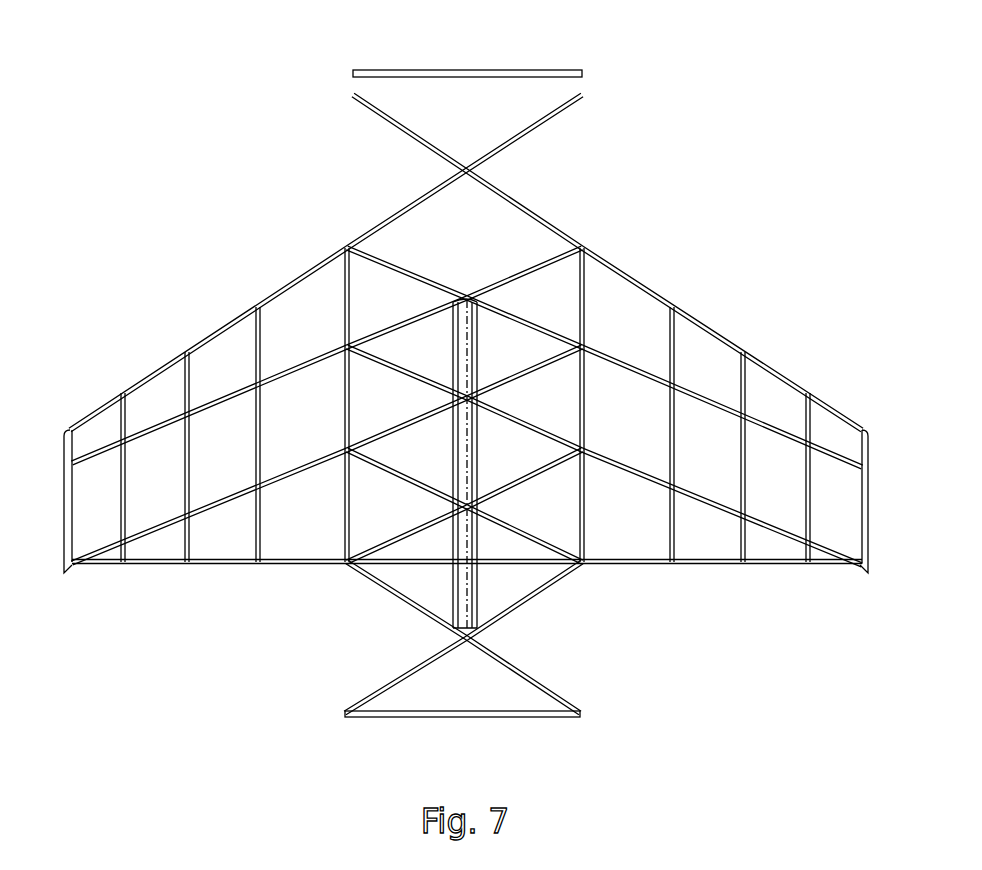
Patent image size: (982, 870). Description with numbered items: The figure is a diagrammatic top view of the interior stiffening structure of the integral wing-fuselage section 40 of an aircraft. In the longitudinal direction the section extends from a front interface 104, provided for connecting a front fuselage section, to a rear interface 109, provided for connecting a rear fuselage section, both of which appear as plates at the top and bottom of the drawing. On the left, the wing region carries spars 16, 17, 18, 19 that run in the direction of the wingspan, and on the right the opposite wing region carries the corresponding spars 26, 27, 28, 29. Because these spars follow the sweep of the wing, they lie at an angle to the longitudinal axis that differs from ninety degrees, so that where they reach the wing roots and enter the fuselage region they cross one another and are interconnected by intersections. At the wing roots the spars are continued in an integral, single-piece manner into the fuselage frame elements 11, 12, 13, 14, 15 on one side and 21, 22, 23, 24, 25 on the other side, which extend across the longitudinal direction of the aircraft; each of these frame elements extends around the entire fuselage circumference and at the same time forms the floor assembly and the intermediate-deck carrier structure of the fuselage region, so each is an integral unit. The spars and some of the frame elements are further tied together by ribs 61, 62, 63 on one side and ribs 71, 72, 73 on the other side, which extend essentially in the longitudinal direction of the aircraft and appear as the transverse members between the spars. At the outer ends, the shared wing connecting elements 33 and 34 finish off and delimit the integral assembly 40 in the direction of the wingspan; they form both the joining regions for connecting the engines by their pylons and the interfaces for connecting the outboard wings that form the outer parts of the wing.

The wing-fuselage section 40 is at (153, 130).
The front interface 104 is at (408, 70).
The rear interface 109 is at (422, 718).
The fuselage frame element 11 is at (386, 220).
The fuselage frame element 12 is at (407, 321).
The fuselage frame element 13 is at (407, 423).
The fuselage frame element 14 is at (400, 537).
The fuselage frame element 15 is at (387, 687).
The spar 16 is at (285, 285).
The spar 17 is at (213, 402).
The spar 18 is at (215, 502).
The spar 19 is at (222, 565).
The fuselage frame element 21 is at (530, 208).
The fuselage frame element 22 is at (527, 322).
The fuselage frame element 23 is at (527, 423).
The fuselage frame element 24 is at (533, 537).
The fuselage frame element 25 is at (543, 687).
The spar 26 is at (647, 285).
The spar 27 is at (703, 396).
The spar 28 is at (702, 498).
The spar 29 is at (643, 565).
The wing connecting element 33 is at (64, 445).
The wing connecting element 34 is at (869, 445).
The rib 61 is at (254, 414).
The rib 62 is at (184, 460).
The rib 63 is at (120, 493).
The rib 71 is at (675, 535).
The rib 72 is at (745, 543).
The rib 73 is at (810, 523).